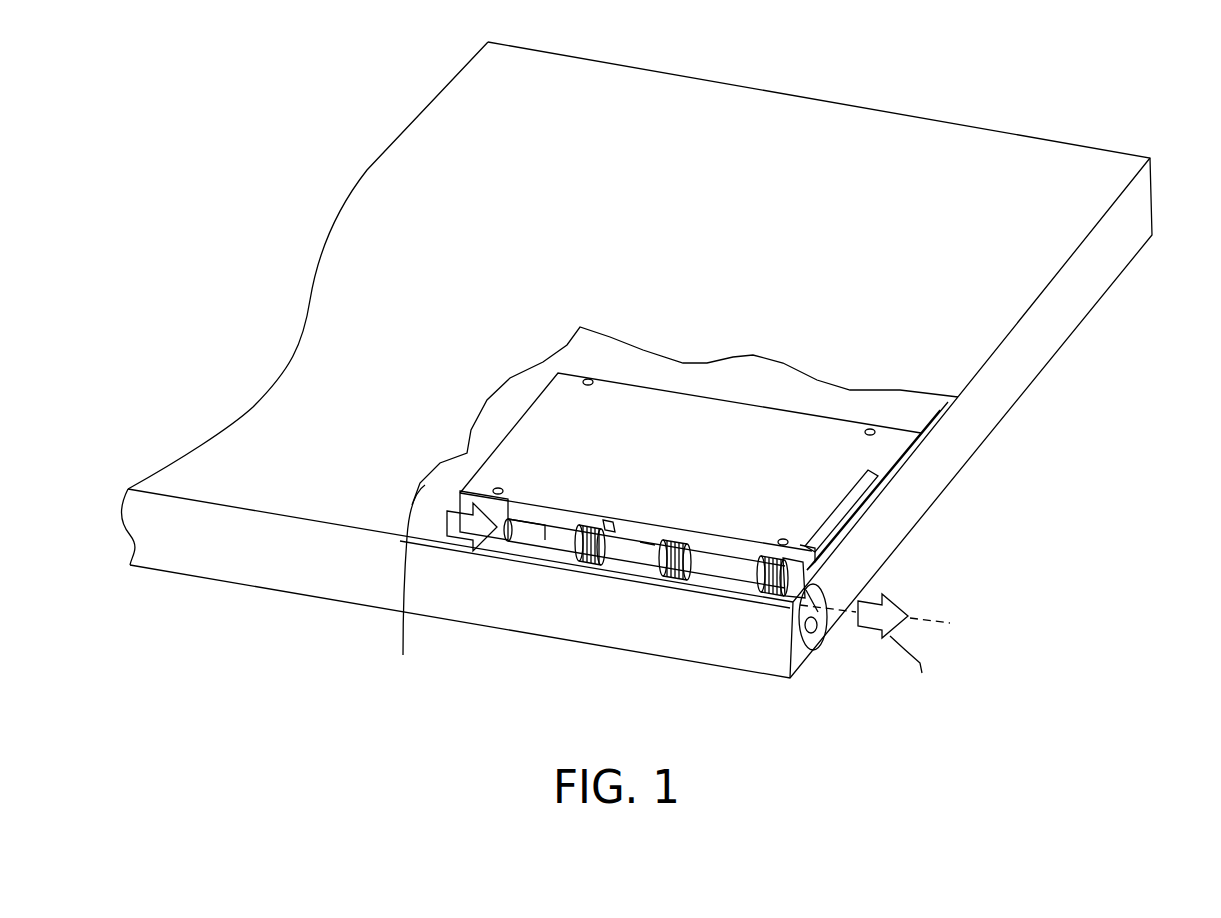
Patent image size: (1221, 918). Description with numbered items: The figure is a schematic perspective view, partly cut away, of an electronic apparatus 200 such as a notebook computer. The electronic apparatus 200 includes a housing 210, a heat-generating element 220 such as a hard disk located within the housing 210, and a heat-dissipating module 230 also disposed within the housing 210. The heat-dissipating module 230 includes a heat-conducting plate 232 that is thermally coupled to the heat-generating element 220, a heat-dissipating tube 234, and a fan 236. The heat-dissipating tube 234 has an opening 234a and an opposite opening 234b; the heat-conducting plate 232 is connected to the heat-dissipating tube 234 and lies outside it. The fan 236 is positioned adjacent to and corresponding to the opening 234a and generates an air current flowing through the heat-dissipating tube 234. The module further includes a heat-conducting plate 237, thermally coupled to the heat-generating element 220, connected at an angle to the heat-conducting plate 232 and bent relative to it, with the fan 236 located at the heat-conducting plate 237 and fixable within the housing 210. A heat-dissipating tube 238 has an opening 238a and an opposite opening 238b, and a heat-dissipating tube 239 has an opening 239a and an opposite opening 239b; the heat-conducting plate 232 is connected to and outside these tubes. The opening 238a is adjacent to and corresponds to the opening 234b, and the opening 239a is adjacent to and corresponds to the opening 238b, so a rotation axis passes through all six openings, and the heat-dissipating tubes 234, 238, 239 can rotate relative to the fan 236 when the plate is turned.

The electronic apparatus 200 is at (669, 394).
The housing 210 is at (1048, 158).
The heat-generating element 220 is at (497, 497).
The heat-dissipating module 230 is at (702, 463).
The heat-conducting plate 232 is at (866, 450).
The heat-dissipating tube 234 is at (803, 610).
The opening 234a is at (823, 623).
The opening 234b is at (653, 565).
The fan 236 is at (800, 583).
The heat-conducting plate 237 is at (830, 528).
The heat-dissipating tube 238 is at (634, 486).
The opening 238a is at (680, 572).
The opening 238b is at (573, 553).
The heat-dissipating tube 239 is at (462, 453).
The opening 239a is at (612, 558).
The opening 239b is at (512, 518).